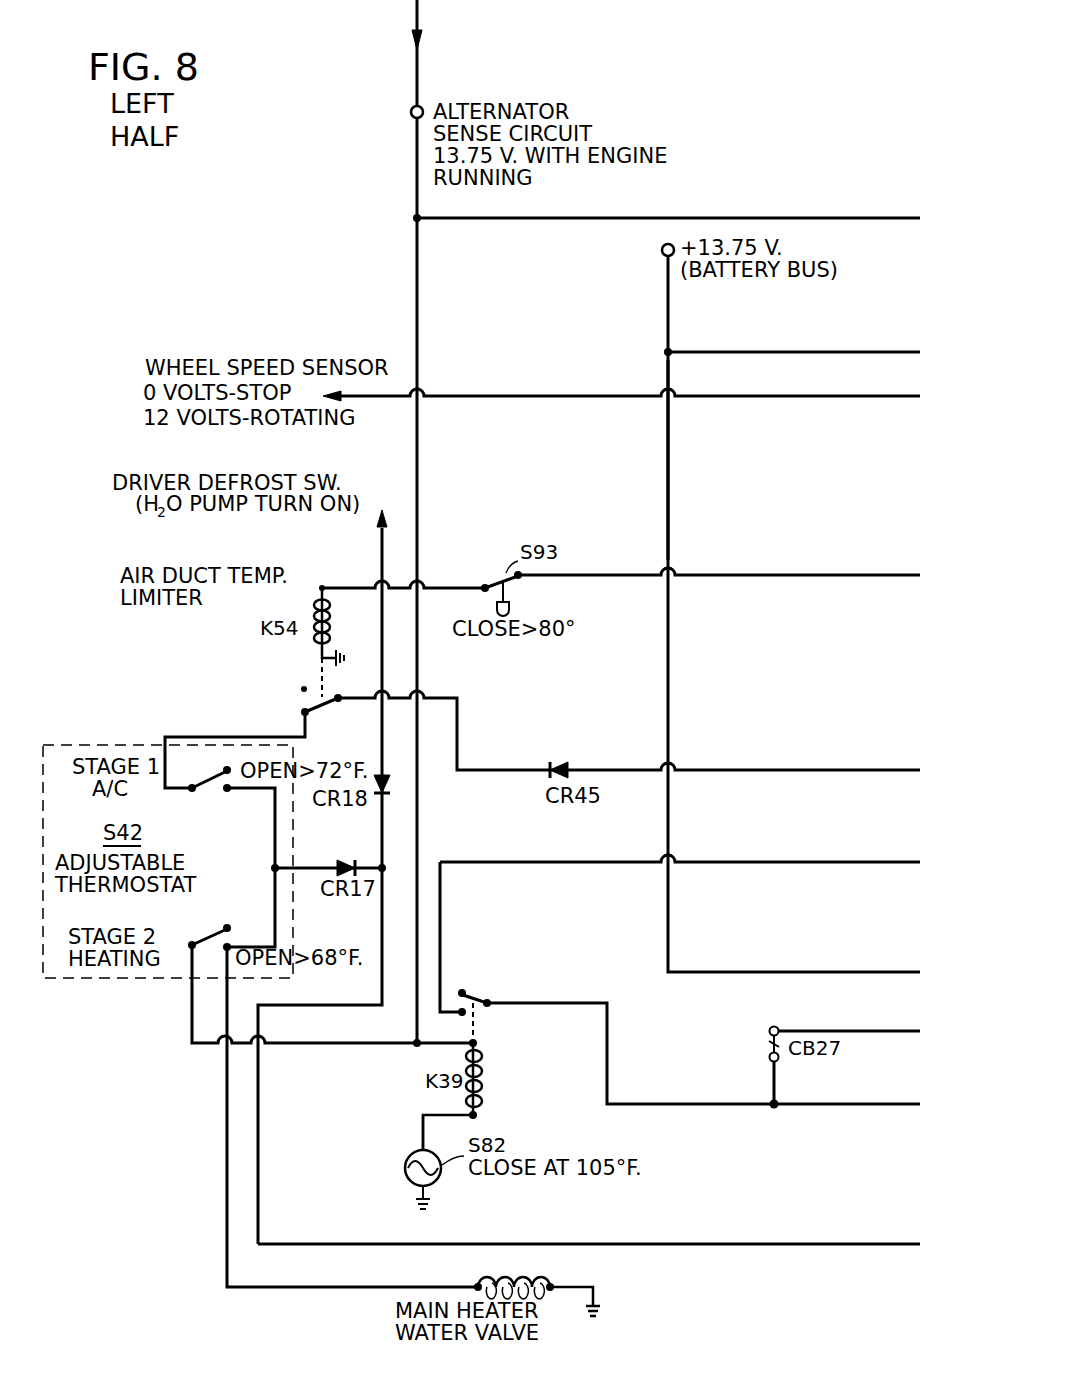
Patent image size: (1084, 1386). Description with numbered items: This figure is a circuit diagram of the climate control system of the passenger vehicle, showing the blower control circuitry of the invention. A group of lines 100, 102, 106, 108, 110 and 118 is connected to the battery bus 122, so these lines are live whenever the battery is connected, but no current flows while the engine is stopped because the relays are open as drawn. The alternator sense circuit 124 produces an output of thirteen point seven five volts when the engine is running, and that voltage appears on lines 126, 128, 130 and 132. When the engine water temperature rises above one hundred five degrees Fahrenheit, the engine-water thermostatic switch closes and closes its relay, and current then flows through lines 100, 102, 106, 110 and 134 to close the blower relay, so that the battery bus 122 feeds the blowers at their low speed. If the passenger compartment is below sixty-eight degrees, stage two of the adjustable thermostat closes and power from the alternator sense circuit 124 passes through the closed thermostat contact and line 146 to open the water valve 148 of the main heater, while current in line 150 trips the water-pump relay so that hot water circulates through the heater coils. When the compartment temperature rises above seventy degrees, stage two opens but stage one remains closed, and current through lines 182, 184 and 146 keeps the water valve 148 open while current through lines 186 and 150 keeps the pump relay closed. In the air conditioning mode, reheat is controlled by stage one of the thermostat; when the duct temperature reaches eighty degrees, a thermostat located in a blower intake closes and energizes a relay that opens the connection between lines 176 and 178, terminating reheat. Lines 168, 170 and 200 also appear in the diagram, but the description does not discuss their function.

The line 100 is at (664, 320).
The line 102 is at (662, 500).
The line 106 is at (776, 1080).
The line 108 is at (858, 1108).
The line 110 is at (606, 1065).
The line 118 is at (805, 352).
The battery bus 122 is at (662, 252).
The alternator sense circuit 124 is at (411, 109).
The line 126 is at (416, 257).
The line 128 is at (341, 1043).
The line 130 is at (422, 1134).
The line 132 is at (805, 218).
The line 134 is at (867, 861).
The line 146 is at (225, 1126).
The water valve 148 is at (480, 1282).
The line 150 is at (259, 1127).
The conductor from thermal switch S93 168 is at (800, 574).
The conductor to thermal switch S93 170 is at (450, 586).
The line 176 is at (867, 769).
The line 178 is at (259, 736).
The line 182 is at (275, 820).
The line 184 is at (275, 912).
The line 186 is at (320, 867).
The wheel speed sensor conductor 200 is at (496, 395).